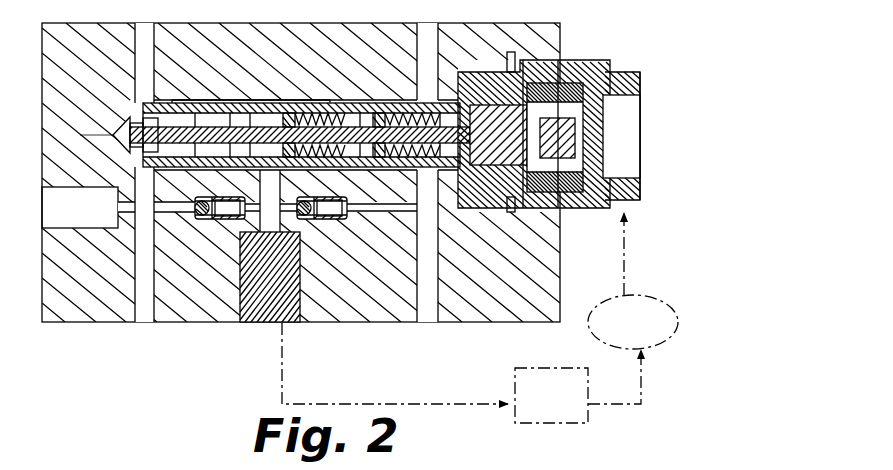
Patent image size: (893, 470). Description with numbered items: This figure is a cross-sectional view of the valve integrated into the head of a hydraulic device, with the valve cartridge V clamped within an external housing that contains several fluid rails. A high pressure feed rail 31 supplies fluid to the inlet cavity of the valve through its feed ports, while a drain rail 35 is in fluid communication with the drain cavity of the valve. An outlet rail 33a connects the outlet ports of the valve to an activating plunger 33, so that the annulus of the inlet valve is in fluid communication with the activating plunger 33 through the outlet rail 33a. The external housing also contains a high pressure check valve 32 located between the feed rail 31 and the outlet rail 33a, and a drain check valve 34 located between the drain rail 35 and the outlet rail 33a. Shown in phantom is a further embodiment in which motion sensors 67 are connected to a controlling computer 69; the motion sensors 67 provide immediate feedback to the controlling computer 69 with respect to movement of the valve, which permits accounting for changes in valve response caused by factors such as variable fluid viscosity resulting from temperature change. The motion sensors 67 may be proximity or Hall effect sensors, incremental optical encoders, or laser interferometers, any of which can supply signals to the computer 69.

The high pressure feed rail 31 is at (418, 300).
The high pressure check valve 32 is at (318, 219).
The activating plunger 33 is at (248, 323).
The outlet rail 33a is at (263, 233).
The drain check valve 34 is at (188, 215).
The drain rail 35 is at (152, 300).
The motion sensors 67 is at (578, 386).
The controlling computer 69 is at (633, 281).
The valve V is at (660, 83).